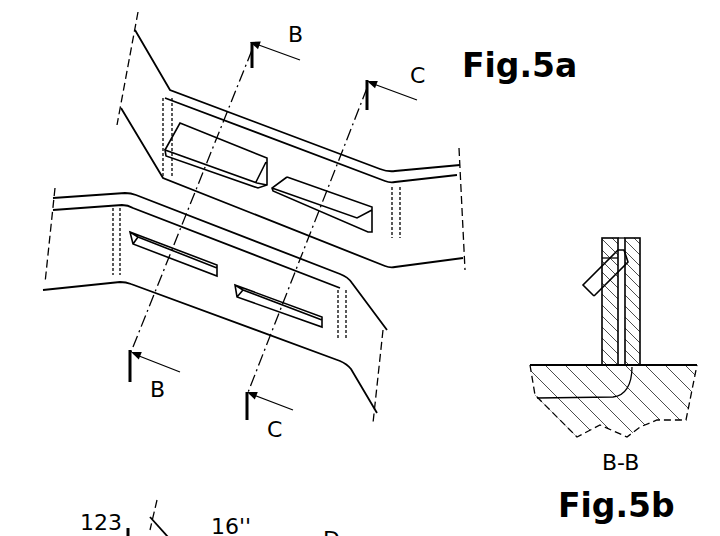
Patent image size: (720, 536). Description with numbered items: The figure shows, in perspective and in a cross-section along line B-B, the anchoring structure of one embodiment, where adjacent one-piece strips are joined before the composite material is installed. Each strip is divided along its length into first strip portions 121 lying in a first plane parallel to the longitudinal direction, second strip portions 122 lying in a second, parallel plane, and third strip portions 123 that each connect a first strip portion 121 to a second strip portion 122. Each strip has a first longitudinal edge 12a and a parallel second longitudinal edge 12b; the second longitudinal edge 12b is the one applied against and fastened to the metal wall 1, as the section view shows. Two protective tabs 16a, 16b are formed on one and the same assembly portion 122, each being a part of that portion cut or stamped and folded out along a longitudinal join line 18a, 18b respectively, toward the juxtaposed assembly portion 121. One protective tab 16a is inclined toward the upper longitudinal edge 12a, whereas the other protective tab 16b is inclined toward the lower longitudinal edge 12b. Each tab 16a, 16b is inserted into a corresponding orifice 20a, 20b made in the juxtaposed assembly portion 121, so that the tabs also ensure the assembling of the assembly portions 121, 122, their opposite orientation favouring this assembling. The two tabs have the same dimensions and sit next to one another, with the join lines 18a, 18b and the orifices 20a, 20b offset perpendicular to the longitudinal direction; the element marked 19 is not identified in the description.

In FIG. 5B, the metal wall 1 is at (560, 365).
In FIG. 5A, the first longitudinal edge 12a is at (88, 190).
In FIG. 5B, the first longitudinal edge 12a is at (608, 238).
In FIG. 5A, the second longitudinal edge 12b is at (73, 288).
In FIG. 5B, the second longitudinal edge 12b is at (537, 398).
In FIG. 5A, the protective tab 16a is at (187, 137).
In FIG. 5B, the protective tab 16a is at (594, 283).
In FIG. 5A, the protective tab 16b is at (345, 185).
In FIG. 5A, the longitudinal join line 18a is at (242, 150).
In FIG. 5B, the longitudinal join line 18a is at (617, 257).
In FIG. 5A, the longitudinal join line 18b is at (350, 240).
In FIG. 5B, the panel edge 19 is at (622, 237).
In FIG. 5A, the orifice 20a is at (130, 192).
In FIG. 5B, the orifice 20a is at (625, 266).
In FIG. 5A, the orifice 20b is at (310, 322).
In FIG. 5A, the first strip portion 121 is at (190, 283).
In FIG. 5B, the first strip portion 121 is at (608, 343).
In FIG. 5A, the second strip portion 122 is at (182, 115).
In FIG. 5B, the second strip portion 122 is at (632, 333).
In FIG. 5A, the third strip portion 123 is at (137, 75).